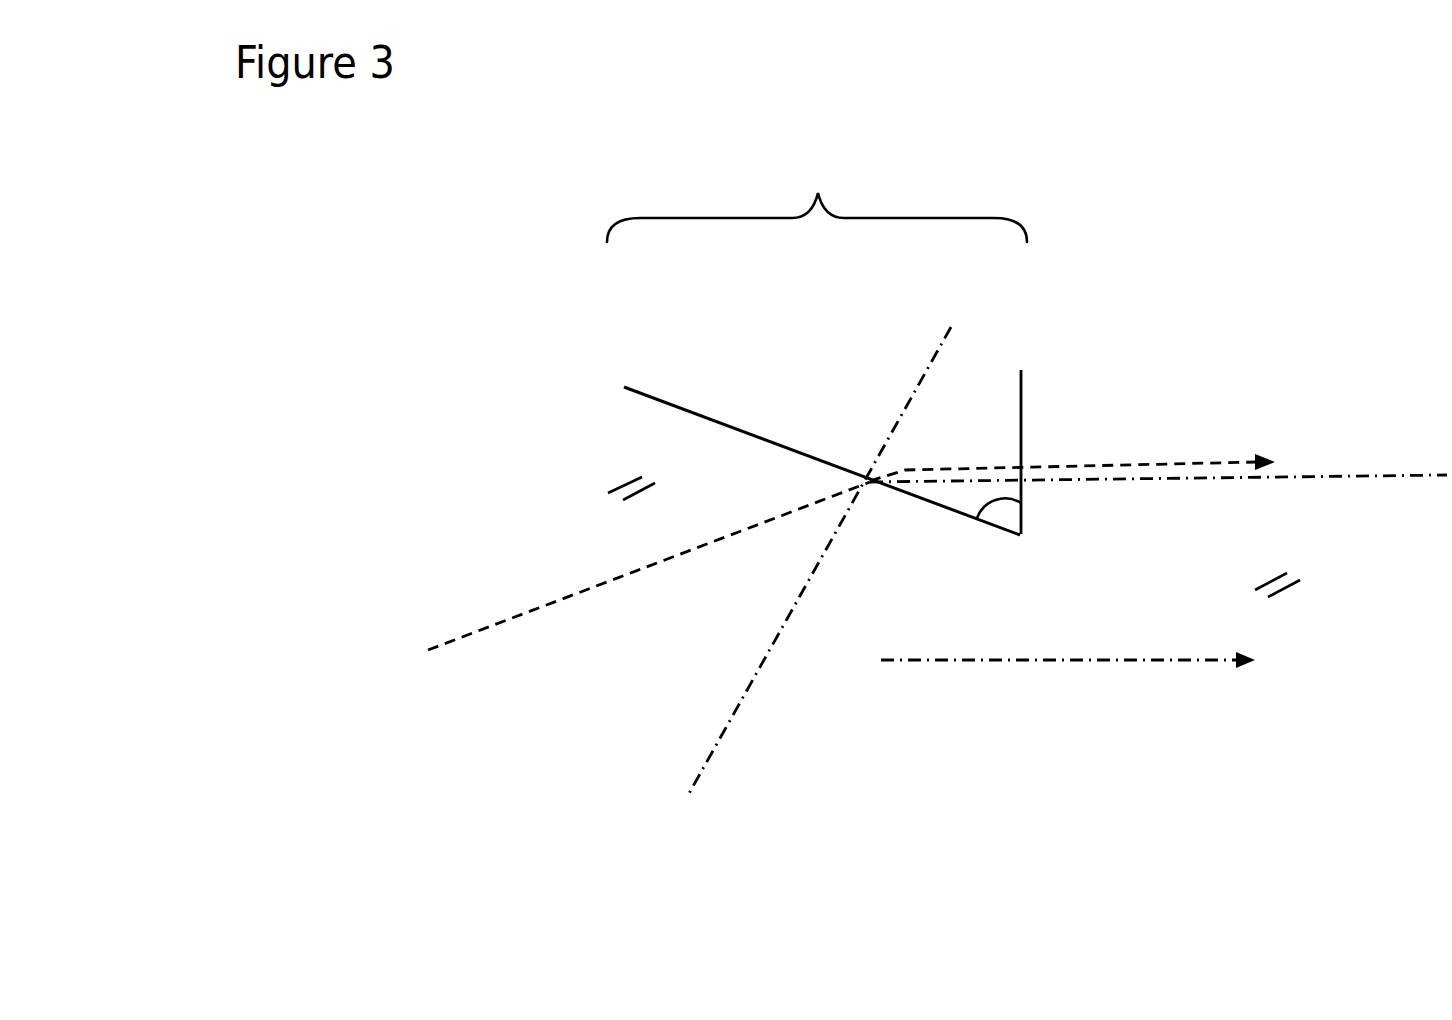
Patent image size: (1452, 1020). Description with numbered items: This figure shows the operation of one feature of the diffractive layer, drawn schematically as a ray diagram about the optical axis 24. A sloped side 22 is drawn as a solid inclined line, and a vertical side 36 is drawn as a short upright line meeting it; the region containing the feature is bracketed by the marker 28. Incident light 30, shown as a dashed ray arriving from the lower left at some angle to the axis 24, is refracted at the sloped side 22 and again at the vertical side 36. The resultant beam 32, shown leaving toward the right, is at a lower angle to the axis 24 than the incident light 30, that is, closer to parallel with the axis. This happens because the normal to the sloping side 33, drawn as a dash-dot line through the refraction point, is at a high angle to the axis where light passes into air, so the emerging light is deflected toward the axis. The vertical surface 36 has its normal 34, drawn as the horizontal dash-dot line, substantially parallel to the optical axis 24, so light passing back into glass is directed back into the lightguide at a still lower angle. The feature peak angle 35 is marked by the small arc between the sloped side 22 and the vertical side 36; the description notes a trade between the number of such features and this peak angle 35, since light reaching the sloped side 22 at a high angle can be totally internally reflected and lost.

The optical interface region 28 is at (817, 194).
The sloped side 22 is at (718, 427).
The incident light 30 is at (467, 637).
The resultant beam 32 is at (1180, 463).
The normal 34 is at (1373, 483).
The normal to the sloping side 33 is at (708, 763).
The axis 24 is at (1068, 686).
The vertical side 36 is at (1022, 390).
The feature peak angle 35 is at (1021, 532).